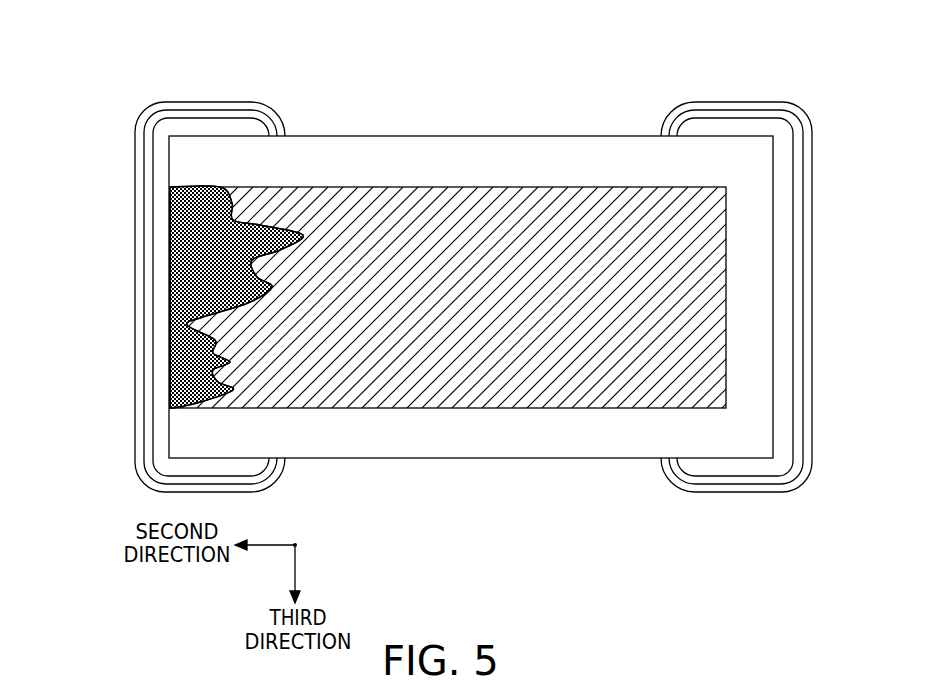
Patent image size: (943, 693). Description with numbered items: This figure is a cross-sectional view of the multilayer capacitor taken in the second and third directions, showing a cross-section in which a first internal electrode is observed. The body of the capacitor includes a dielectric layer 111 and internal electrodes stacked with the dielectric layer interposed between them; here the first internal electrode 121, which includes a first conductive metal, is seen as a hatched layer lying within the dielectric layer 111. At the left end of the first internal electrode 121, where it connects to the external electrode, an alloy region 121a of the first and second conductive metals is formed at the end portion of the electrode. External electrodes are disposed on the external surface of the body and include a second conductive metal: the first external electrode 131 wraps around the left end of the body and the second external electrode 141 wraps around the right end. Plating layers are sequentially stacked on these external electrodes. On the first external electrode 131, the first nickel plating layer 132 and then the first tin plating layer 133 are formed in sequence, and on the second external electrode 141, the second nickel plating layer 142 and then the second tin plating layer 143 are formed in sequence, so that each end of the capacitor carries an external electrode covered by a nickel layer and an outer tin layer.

The dielectric layer 111 is at (543, 443).
The first internal electrode 121 is at (525, 232).
The alloy region 121a is at (198, 258).
The first external electrode 131 is at (247, 127).
The first nickel plating layer 132 is at (215, 118).
The first tin plating layer 133 is at (173, 108).
The second external electrode 141 is at (700, 127).
The second nickel plating layer 142 is at (732, 118).
The second tin plating layer 143 is at (777, 108).